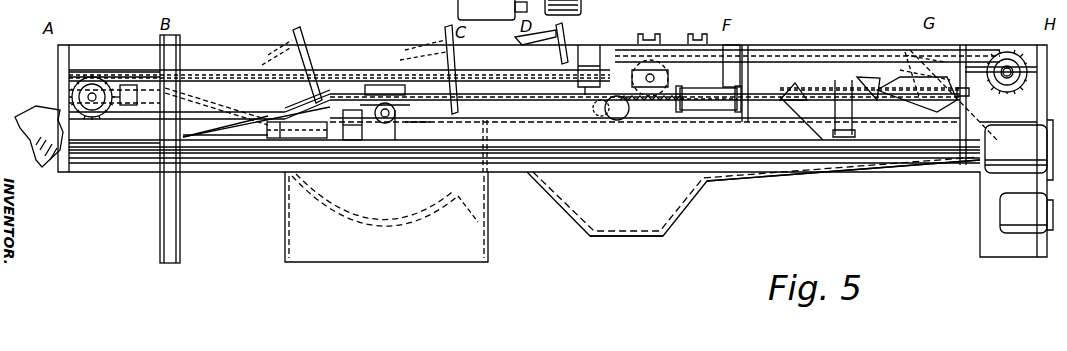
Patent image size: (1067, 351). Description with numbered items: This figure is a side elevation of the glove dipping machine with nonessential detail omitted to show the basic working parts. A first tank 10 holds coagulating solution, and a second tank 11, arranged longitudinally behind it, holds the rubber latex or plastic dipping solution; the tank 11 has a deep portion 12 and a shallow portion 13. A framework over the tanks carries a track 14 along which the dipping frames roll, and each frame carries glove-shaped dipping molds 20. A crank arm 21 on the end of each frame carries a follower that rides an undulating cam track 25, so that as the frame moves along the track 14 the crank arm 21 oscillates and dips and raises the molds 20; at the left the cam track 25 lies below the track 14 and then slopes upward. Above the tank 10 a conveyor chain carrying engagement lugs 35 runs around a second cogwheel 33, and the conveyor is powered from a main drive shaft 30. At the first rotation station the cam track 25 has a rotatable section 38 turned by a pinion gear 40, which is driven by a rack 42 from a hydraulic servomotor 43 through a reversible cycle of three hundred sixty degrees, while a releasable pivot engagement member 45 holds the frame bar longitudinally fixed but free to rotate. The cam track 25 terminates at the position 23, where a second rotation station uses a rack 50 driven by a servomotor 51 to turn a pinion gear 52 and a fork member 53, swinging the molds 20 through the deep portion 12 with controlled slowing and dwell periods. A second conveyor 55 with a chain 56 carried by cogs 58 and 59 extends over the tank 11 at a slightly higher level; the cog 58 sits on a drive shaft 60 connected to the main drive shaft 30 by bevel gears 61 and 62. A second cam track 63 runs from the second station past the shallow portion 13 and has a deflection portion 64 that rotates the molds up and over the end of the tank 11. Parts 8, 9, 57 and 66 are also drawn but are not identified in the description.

The control unit 8 is at (389, 15).
The motor 9 is at (590, 9).
The tank 10 is at (478, 222).
The second tank 11 is at (690, 210).
The deep portion 12 is at (625, 222).
The shallow portion 13 is at (815, 166).
The track 14 is at (230, 118).
The dipping mold 20 is at (42, 168).
The crank arm 21 is at (225, 142).
The cam track termination position 23 is at (600, 110).
The cam track 25 is at (110, 145).
The main drive shaft 30 is at (250, 152).
The second cogwheel 33 is at (650, 60).
The engagement lugs 35 is at (362, 68).
The rotatable section 38 is at (388, 92).
The pinion gear 40 is at (392, 120).
The rack 42 is at (355, 141).
The hydraulic servomotor 43 is at (285, 139).
The releasable pivot engagement member 45 is at (380, 126).
The rack 50 is at (695, 112).
The servomotor 51 is at (733, 108).
The pinion gear 52 is at (619, 121).
The fork member 53 is at (605, 118).
The conveyor 55 is at (898, 35).
The chain 56 is at (791, 52).
The support 57 is at (820, 46).
The cog 58 is at (1003, 50).
The cog 59 is at (669, 52).
The drive shaft 60 is at (1020, 60).
The bevel gear 61 is at (987, 48).
The bevel gear 62 is at (995, 52).
The second cam track 63 is at (765, 88).
The deflection portion 64 is at (857, 75).
The plate 66 is at (900, 78).